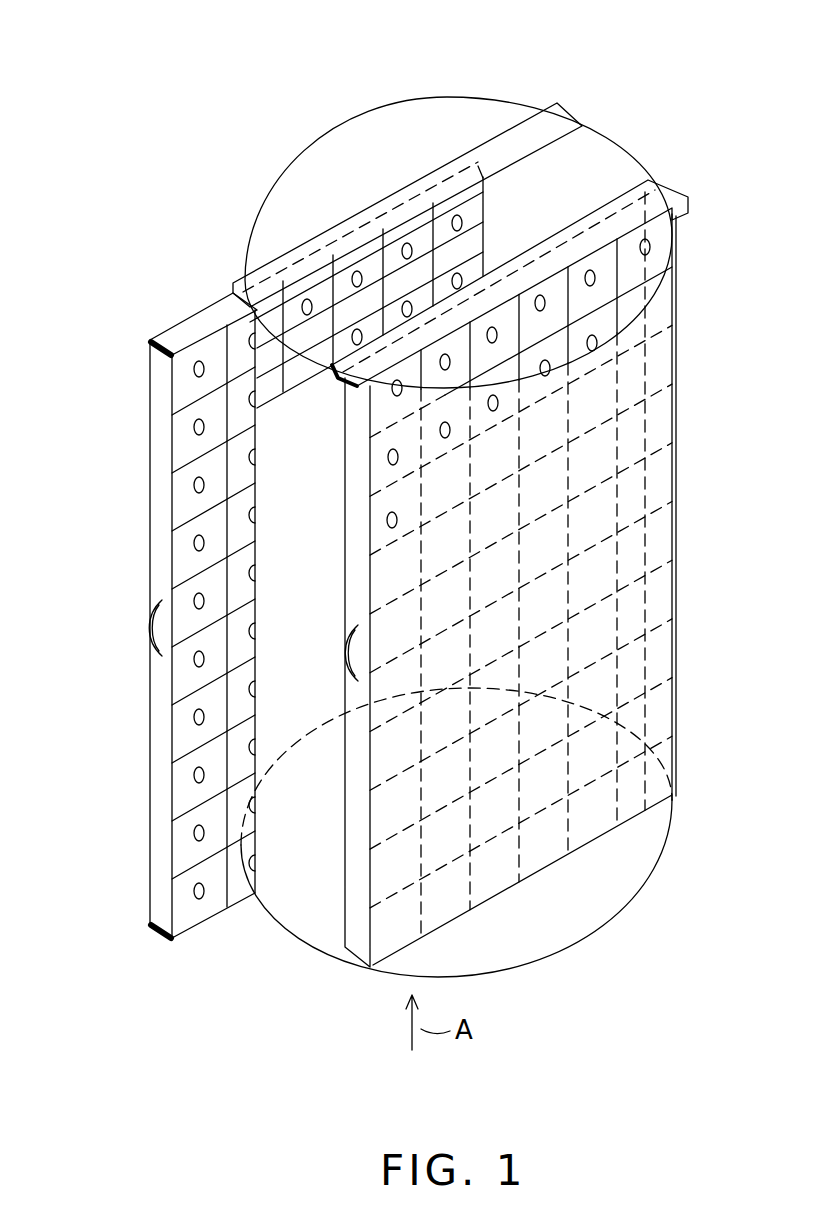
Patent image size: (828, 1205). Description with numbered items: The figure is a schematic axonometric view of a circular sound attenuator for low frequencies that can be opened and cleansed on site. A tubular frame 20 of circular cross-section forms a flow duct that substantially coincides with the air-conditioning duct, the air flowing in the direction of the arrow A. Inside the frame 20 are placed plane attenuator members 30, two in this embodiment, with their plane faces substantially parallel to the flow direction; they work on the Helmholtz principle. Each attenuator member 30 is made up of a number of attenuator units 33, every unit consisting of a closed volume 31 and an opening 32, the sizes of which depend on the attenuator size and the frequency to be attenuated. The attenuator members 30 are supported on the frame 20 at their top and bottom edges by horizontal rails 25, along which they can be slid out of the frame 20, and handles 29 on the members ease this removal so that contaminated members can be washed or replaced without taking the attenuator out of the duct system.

The frame 20 is at (641, 155).
The horizontal rails 25 is at (559, 108).
The handles 29 is at (143, 648).
The attenuator member 30 is at (183, 366).
The closed volume 31 is at (207, 906).
The opening 32 is at (190, 895).
The attenuator units 33 is at (184, 849).